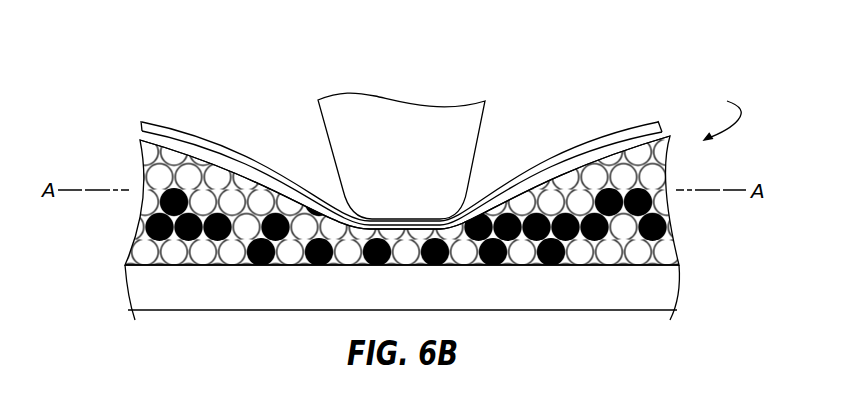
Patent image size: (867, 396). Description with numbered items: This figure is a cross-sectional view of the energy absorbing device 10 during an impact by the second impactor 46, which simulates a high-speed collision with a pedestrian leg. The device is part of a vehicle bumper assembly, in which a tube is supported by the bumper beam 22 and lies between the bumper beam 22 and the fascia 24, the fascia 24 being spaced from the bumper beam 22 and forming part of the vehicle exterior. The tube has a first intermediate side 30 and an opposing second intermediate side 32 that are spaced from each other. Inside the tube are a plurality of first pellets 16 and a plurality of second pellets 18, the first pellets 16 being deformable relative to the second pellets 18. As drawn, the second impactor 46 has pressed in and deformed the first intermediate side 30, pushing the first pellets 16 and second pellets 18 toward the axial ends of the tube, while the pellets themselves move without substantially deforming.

The energy absorbing device 10 is at (720, 116).
The first pellets 16 is at (160, 175).
The second pellets 18 is at (173, 253).
The bumper beam 22 is at (570, 312).
The fascia 24 is at (592, 137).
The first intermediate side 30 is at (188, 148).
The second intermediate side 32 is at (277, 268).
The second impactor 46 is at (378, 112).